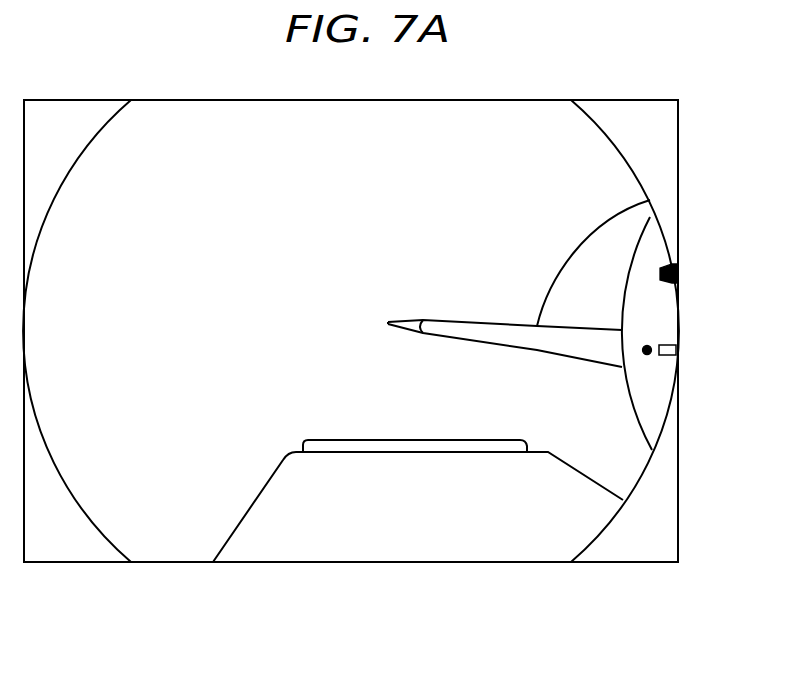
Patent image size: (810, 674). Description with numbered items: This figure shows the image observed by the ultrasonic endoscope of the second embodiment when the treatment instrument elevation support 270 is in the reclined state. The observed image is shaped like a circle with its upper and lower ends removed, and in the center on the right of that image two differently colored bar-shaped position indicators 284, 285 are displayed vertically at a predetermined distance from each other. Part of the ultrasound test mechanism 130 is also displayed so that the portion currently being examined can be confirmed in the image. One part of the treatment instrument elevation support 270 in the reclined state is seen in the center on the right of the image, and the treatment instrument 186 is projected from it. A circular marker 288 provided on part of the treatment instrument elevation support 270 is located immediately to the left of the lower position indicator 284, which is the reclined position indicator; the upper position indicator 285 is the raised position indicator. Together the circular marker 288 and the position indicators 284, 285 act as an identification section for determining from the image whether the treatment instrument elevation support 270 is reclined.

The ultrasound test mechanism 130 is at (486, 548).
The treatment instrument 186 is at (650, 200).
The treatment instrument elevation support 270 is at (652, 236).
The position indicator 285 is at (680, 258).
The position indicator 284 is at (678, 346).
The circular marker 288 is at (650, 353).